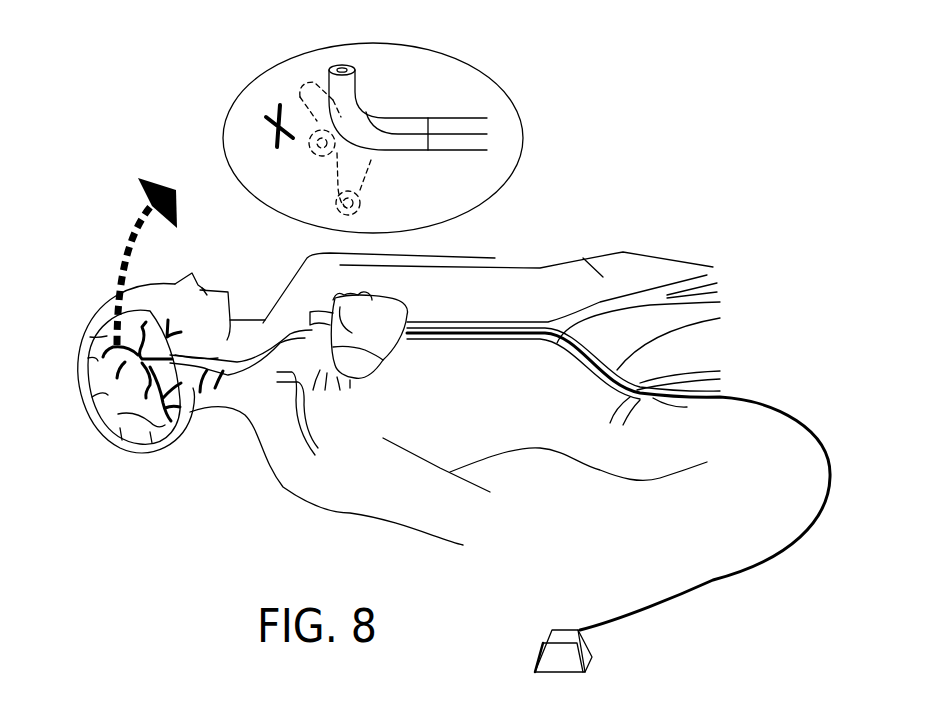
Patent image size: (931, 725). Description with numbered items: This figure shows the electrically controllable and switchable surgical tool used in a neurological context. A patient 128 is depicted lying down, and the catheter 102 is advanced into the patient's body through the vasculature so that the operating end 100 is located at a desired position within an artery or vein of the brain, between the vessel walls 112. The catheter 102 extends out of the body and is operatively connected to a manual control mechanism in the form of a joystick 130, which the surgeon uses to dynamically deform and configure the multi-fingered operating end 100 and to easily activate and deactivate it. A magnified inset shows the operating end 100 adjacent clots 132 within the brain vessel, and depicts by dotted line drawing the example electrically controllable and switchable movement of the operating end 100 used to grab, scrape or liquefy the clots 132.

The operating end 100 is at (405, 73).
The catheter 102 is at (483, 148).
The walls 112 is at (443, 345).
The patient 128 is at (663, 347).
The joystick 130 is at (550, 662).
The clots 132 is at (258, 102).